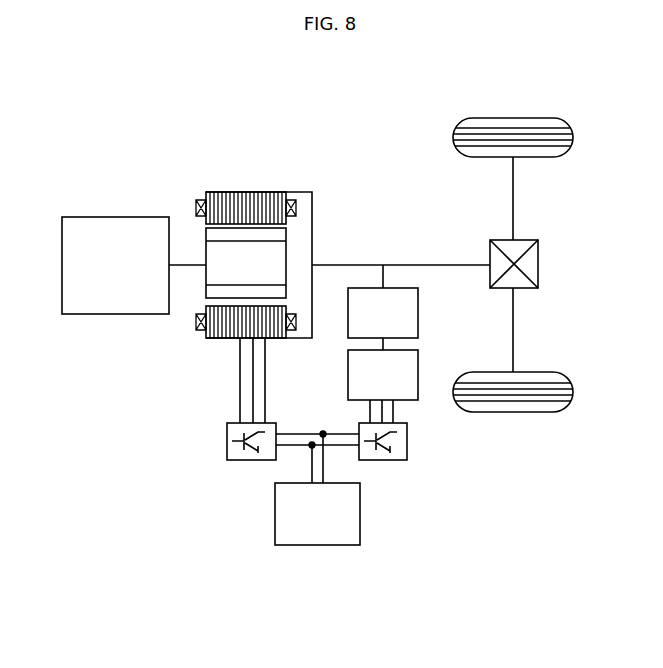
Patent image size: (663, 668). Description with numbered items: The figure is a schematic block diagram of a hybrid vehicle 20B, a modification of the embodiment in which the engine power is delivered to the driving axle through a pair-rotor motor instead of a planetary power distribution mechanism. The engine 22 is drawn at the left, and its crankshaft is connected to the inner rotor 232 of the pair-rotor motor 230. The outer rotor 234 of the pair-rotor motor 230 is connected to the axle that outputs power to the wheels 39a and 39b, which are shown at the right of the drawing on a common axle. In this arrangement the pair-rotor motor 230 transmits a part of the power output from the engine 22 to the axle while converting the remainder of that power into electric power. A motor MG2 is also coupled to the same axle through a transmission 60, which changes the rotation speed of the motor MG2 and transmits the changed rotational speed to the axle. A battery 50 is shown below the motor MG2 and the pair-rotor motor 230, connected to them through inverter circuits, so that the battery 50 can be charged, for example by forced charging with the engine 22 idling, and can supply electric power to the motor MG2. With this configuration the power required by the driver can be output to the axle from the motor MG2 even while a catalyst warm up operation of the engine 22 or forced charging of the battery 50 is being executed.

The engine 22 is at (118, 217).
The pair-rotor motor 230 is at (252, 200).
The inner rotor 232 is at (206, 262).
The outer rotor 234 is at (277, 192).
The transmission 60 is at (418, 318).
The motor MG2 is at (348, 376).
The battery 50 is at (360, 508).
The wheel 39a is at (510, 412).
The wheel 39b is at (513, 118).
The hybrid vehicle 20B is at (120, 412).